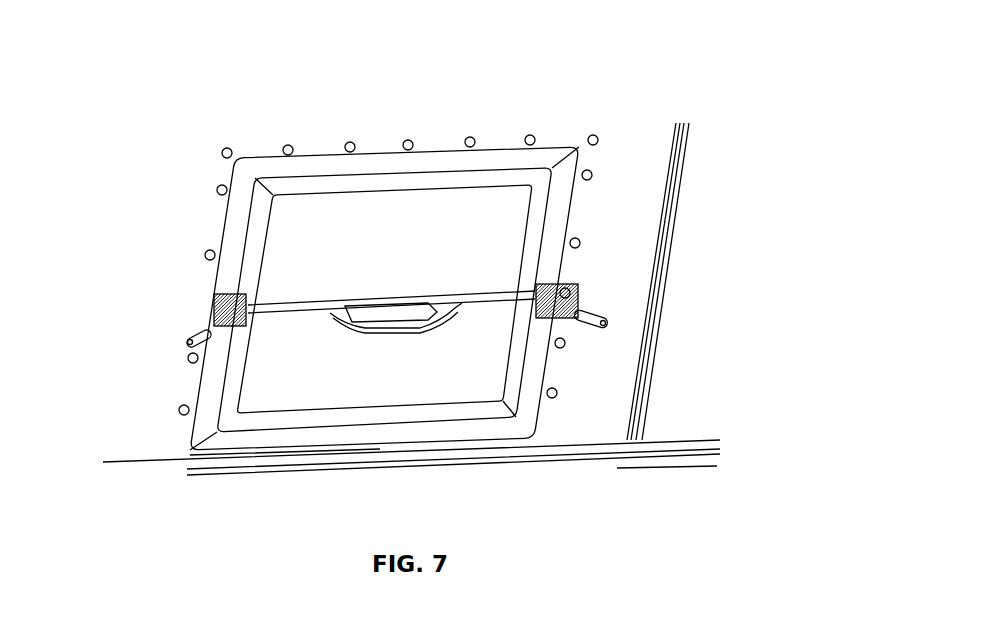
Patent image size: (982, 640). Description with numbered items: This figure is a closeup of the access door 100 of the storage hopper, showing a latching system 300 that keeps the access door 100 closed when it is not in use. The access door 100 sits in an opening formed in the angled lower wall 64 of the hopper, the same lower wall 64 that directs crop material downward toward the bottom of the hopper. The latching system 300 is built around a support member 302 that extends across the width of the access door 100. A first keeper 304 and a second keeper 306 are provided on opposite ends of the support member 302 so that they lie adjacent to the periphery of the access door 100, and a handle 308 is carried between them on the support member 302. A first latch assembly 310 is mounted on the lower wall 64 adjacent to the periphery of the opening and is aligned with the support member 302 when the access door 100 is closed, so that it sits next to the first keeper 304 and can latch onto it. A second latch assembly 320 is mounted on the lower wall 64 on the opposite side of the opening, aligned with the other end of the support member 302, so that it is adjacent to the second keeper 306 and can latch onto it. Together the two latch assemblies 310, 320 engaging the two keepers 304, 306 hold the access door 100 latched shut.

The access door 100 is at (498, 227).
The lower wall 64 is at (628, 207).
The latching system 300 is at (188, 233).
The support member 302 is at (302, 305).
The first keeper 304 is at (218, 290).
The second keeper 306 is at (541, 313).
The handle 308 is at (422, 328).
The first latch assembly 310 is at (203, 311).
The second latch assembly 320 is at (573, 310).